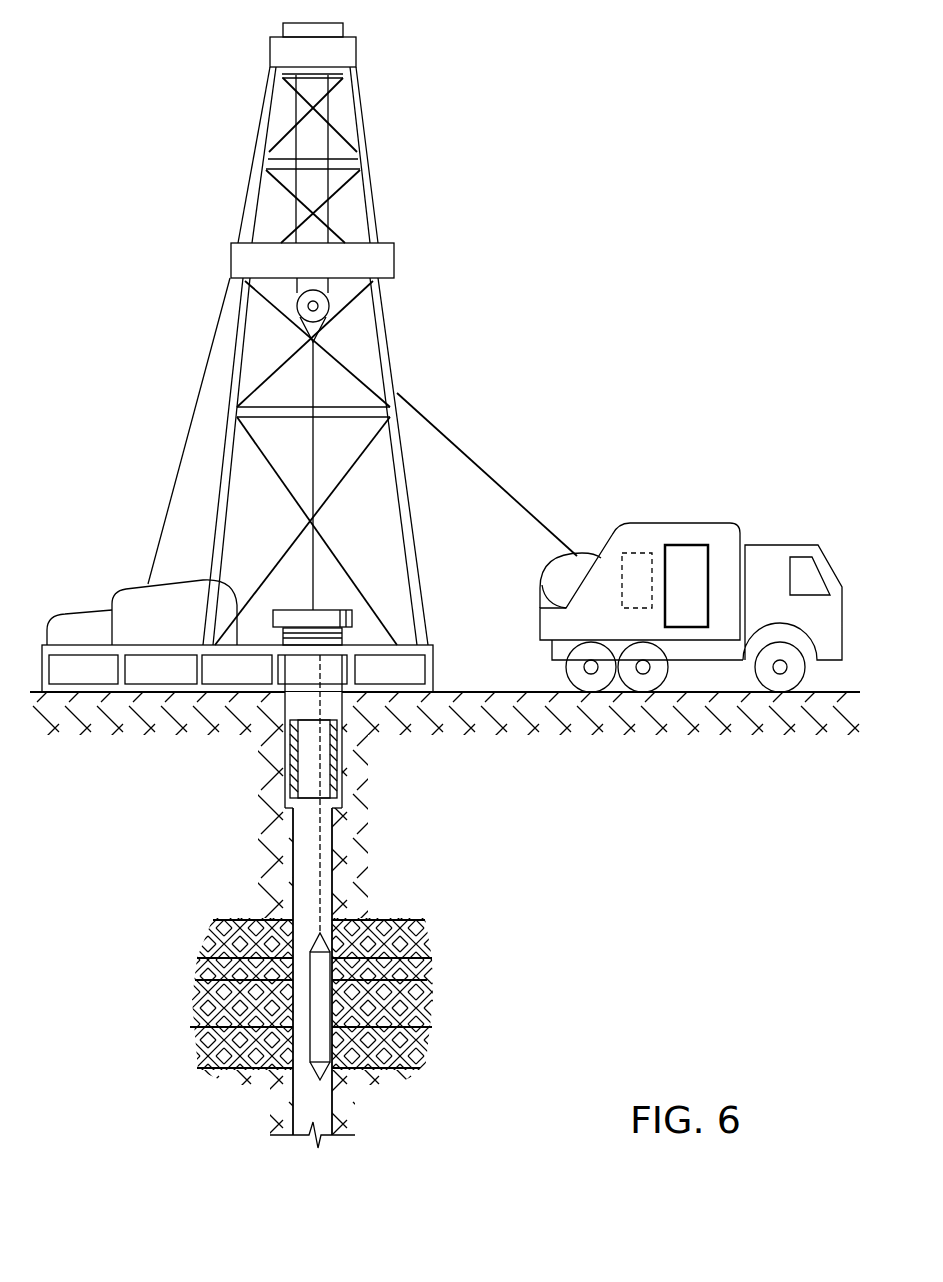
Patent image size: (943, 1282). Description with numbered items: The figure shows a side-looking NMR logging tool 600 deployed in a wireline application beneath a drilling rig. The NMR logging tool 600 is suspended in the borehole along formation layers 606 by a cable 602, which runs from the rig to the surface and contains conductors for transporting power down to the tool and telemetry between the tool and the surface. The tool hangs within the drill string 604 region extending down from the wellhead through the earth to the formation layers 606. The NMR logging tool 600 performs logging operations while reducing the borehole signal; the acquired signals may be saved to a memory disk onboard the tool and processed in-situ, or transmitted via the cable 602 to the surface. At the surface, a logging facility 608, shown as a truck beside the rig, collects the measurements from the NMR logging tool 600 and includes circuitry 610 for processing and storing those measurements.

The NMR logging tool 600 is at (310, 996).
The cable 602 is at (433, 427).
The drill string 604 is at (333, 862).
The formation layers 606 is at (453, 920).
The logging facility 608 is at (691, 575).
The circuitry 610 is at (632, 553).